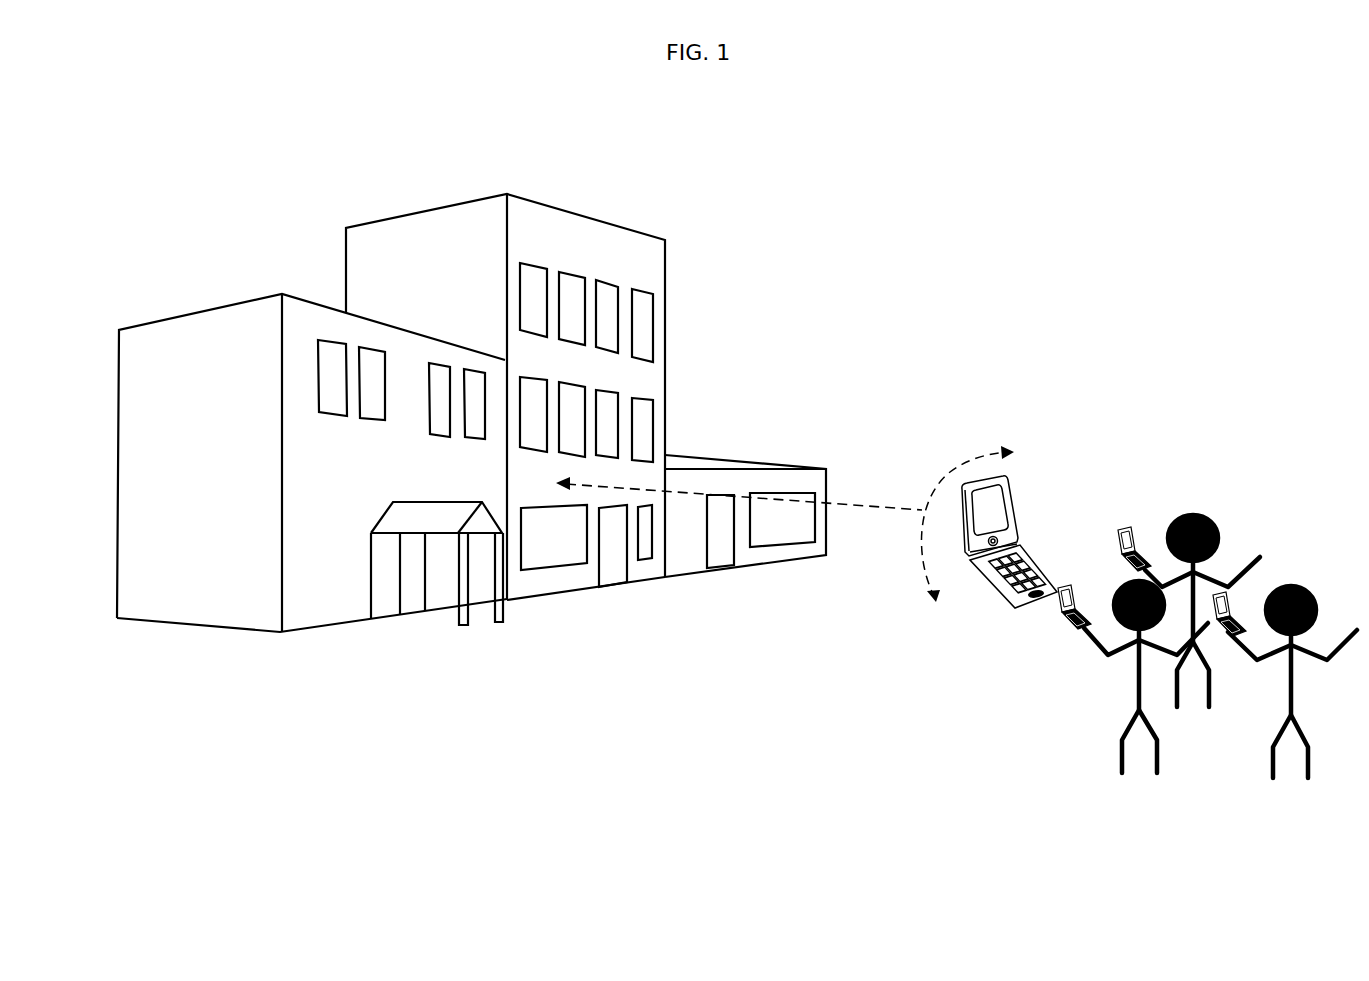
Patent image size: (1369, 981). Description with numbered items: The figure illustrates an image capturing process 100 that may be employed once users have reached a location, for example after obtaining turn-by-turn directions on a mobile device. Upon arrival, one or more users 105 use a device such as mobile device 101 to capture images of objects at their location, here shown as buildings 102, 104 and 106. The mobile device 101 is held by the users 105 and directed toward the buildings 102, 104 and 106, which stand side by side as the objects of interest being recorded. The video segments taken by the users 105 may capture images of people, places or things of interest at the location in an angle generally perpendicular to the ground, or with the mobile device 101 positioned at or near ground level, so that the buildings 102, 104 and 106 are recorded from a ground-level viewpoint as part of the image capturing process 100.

The image capturing process 100 is at (1302, 61).
The mobile device 101 is at (987, 598).
The building 102 is at (215, 309).
The building 104 is at (403, 214).
The users 105 is at (1255, 542).
The building 106 is at (753, 463).